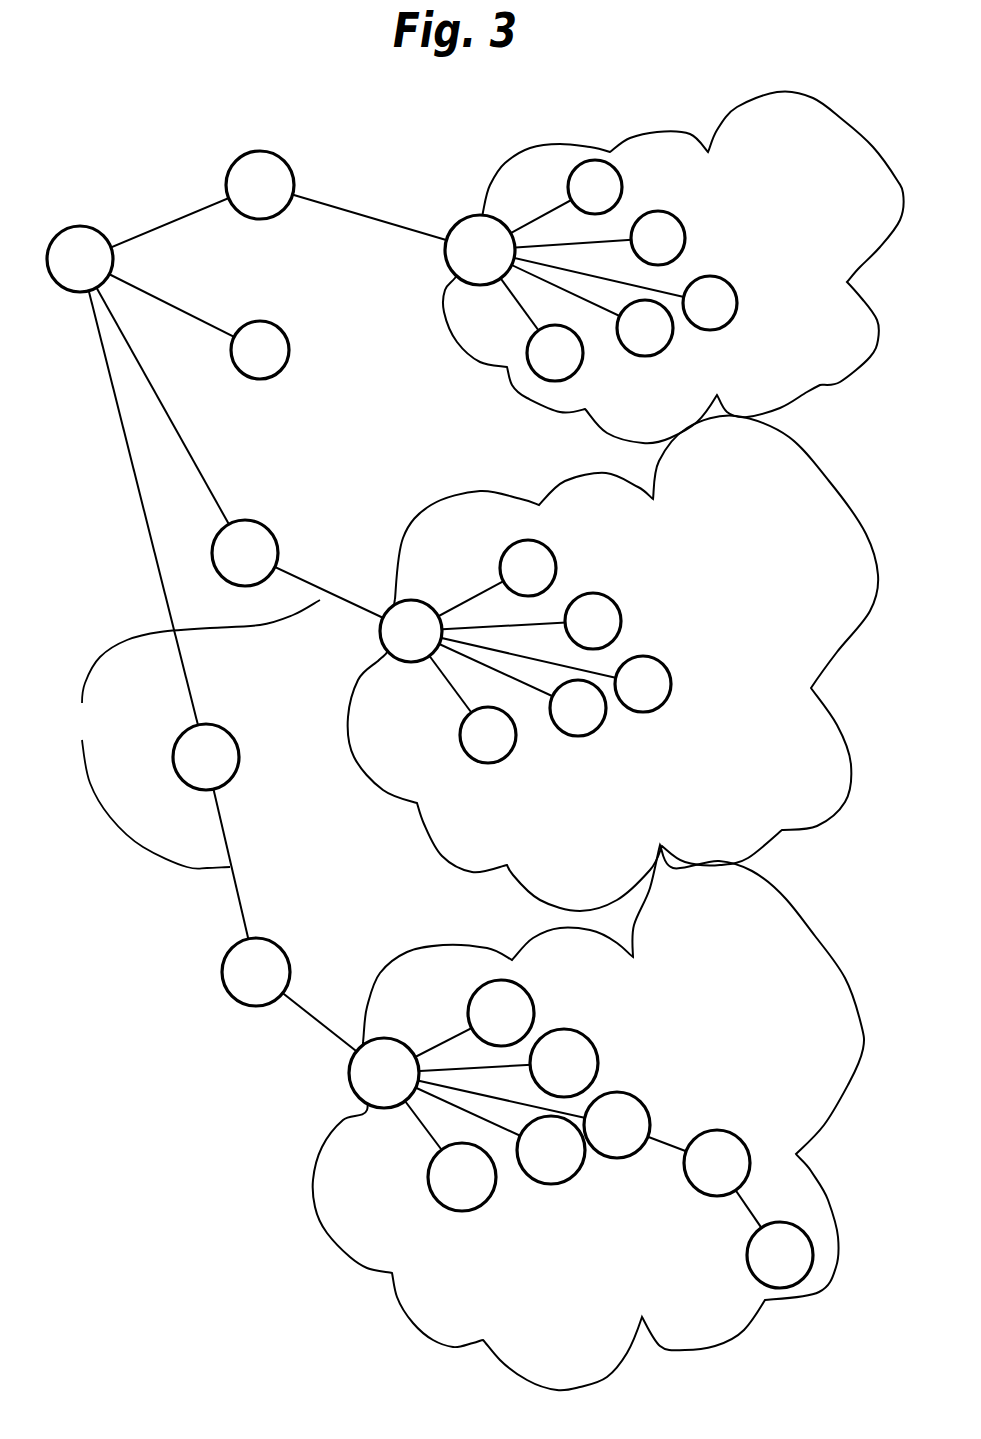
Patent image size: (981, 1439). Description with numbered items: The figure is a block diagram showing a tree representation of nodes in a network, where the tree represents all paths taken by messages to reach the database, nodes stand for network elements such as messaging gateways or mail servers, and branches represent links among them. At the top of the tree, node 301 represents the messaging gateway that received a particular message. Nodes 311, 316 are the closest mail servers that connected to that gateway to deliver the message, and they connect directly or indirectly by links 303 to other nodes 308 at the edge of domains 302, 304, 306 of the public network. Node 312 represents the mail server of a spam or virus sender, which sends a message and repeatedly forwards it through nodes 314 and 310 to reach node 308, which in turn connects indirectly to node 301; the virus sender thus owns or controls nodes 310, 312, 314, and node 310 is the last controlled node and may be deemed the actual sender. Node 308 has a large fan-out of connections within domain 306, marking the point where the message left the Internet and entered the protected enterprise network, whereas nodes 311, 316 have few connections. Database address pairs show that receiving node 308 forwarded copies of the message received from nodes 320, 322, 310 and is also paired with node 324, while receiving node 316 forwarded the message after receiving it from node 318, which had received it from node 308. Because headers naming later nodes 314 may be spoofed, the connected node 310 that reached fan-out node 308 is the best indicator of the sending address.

The node 301 is at (60, 274).
The domain 302 is at (522, 194).
The links 303 is at (193, 734).
The domain 304 is at (438, 546).
The domain 306 is at (407, 1002).
The node 308 is at (364, 1088).
The node 310 is at (597, 1140).
The node 311 is at (225, 568).
The node 312 is at (760, 1270).
The node 314 is at (697, 1178).
The node 316 is at (186, 772).
The node 318 is at (236, 987).
The node 320 is at (481, 1028).
The node 322 is at (544, 1078).
The node 324 is at (531, 1165).